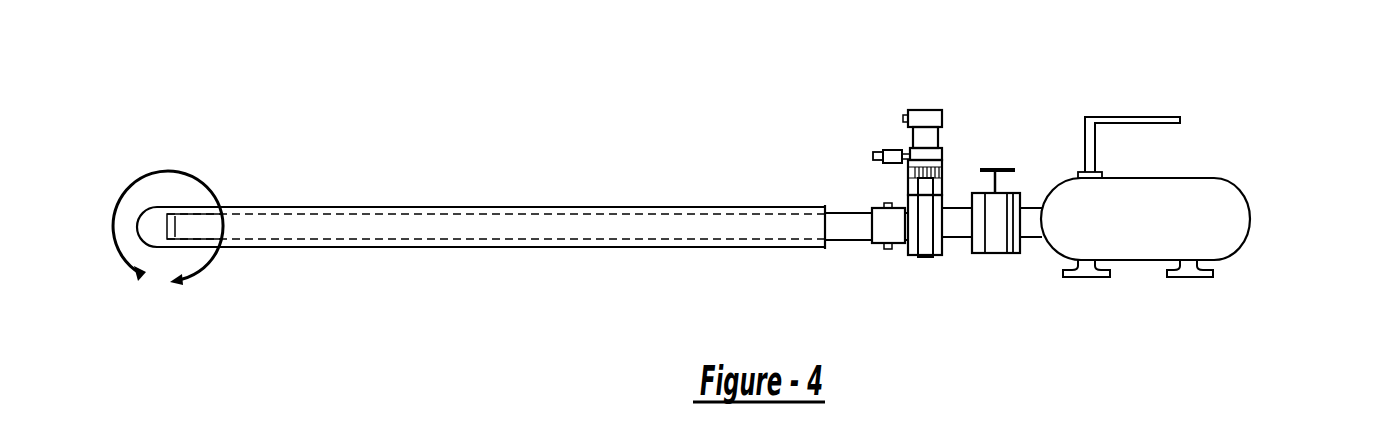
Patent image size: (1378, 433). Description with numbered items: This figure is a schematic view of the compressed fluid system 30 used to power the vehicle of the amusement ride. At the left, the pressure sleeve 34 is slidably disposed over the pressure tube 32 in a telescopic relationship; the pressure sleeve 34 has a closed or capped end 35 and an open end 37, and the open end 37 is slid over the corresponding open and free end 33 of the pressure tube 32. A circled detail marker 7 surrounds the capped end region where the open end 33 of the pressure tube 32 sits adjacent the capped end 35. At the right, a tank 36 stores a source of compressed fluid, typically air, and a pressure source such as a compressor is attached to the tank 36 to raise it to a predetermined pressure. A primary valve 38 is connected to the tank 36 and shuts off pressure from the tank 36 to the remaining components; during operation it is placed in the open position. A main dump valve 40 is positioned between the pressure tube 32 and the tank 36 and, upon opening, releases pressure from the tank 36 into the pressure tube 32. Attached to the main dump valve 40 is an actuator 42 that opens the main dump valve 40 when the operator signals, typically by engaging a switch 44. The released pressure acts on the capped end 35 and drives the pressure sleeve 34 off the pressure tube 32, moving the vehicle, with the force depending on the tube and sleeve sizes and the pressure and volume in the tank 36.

The compressed fluid system 30 is at (551, 135).
The pressure tube 32 is at (838, 222).
The open and free end of the pressure tube 33 is at (180, 214).
The pressure sleeve 34 is at (478, 206).
The capped end 35 is at (143, 216).
The tank 36 is at (1138, 261).
The open end 37 is at (828, 206).
The primary valve 38 is at (1000, 254).
The main dump valve 40 is at (924, 257).
The actuator 42 is at (943, 135).
The switch 44 is at (890, 150).
The view indicator 7 is at (168, 240).